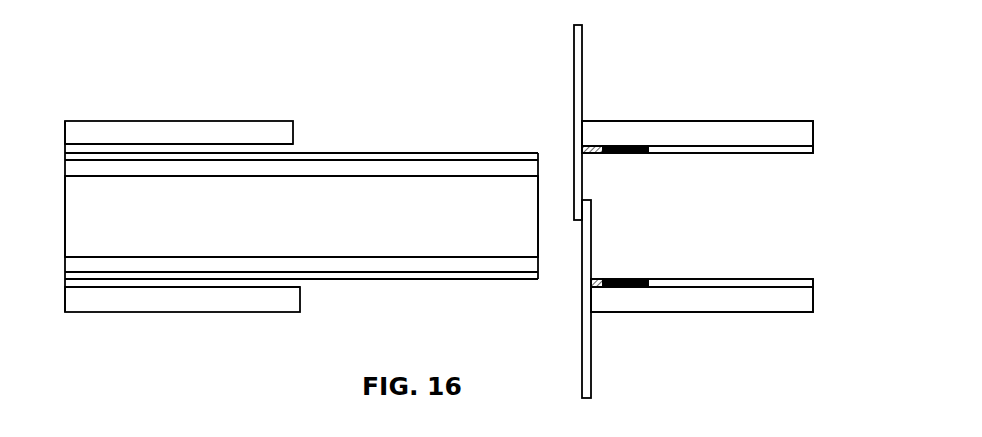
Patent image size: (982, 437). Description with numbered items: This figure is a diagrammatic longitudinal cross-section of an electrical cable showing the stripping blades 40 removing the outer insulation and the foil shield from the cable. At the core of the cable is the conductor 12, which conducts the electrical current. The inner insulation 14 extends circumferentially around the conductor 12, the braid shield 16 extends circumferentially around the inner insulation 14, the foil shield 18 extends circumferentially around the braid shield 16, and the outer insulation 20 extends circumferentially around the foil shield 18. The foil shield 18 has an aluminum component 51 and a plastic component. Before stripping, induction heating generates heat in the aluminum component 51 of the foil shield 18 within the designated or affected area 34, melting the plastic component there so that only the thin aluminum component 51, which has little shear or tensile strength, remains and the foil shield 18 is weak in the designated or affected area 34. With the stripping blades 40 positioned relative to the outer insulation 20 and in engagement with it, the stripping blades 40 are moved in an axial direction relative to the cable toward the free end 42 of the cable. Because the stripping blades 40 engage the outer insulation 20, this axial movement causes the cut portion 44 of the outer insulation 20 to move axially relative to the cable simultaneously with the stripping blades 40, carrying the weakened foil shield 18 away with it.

The conductor 12 is at (490, 237).
The inner insulation 14 is at (360, 167).
The braid shield 16 is at (320, 153).
The foil shield 18 is at (175, 147).
The outer insulation 20 is at (133, 127).
The designated or affected area 34 is at (625, 155).
The stripping blades 40 is at (583, 59).
The free end 42 is at (540, 195).
The cut portion 44 is at (683, 118).
The aluminum component 51 is at (592, 143).